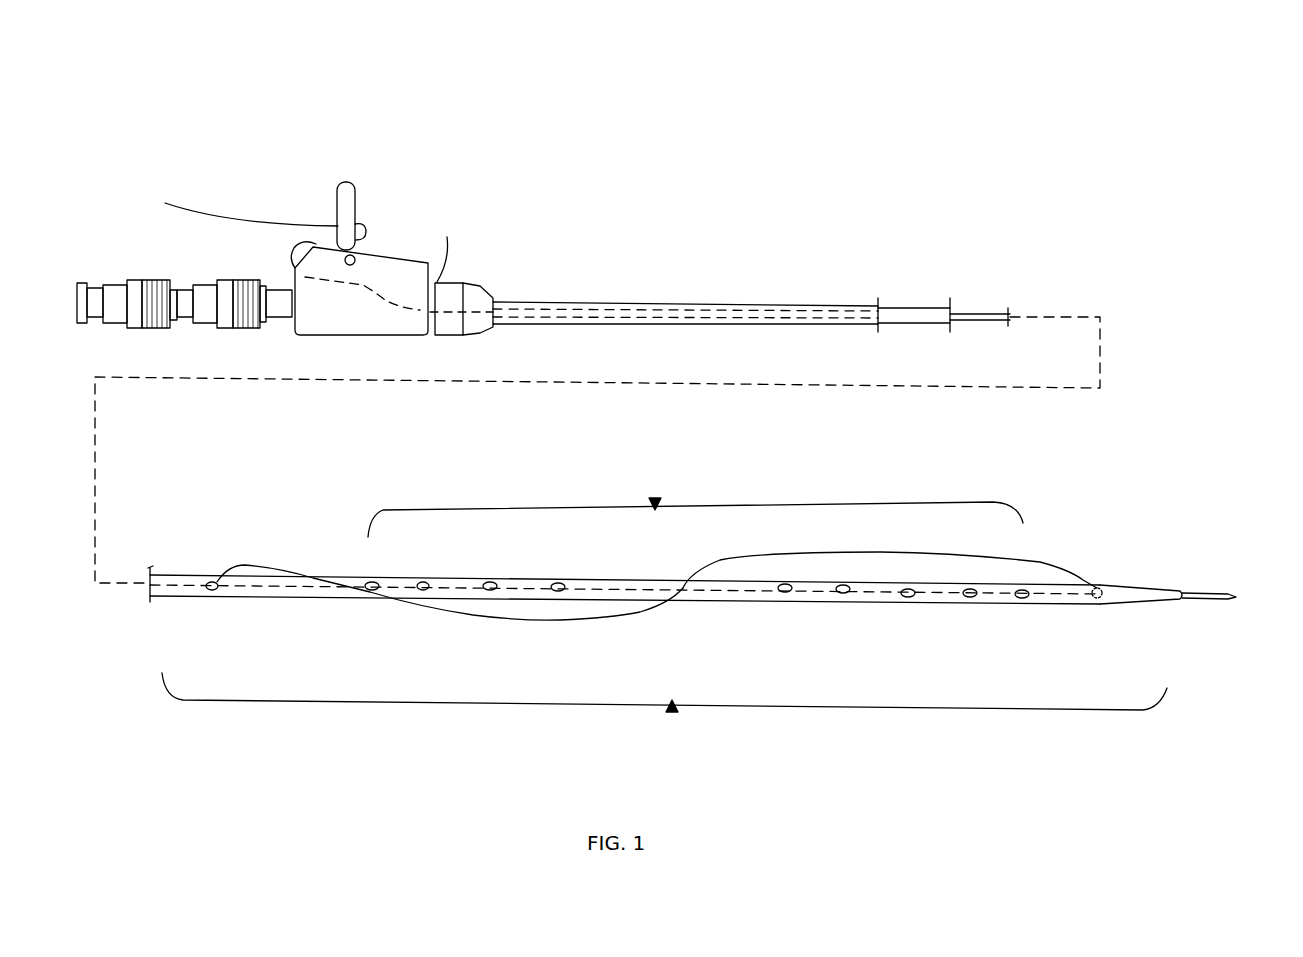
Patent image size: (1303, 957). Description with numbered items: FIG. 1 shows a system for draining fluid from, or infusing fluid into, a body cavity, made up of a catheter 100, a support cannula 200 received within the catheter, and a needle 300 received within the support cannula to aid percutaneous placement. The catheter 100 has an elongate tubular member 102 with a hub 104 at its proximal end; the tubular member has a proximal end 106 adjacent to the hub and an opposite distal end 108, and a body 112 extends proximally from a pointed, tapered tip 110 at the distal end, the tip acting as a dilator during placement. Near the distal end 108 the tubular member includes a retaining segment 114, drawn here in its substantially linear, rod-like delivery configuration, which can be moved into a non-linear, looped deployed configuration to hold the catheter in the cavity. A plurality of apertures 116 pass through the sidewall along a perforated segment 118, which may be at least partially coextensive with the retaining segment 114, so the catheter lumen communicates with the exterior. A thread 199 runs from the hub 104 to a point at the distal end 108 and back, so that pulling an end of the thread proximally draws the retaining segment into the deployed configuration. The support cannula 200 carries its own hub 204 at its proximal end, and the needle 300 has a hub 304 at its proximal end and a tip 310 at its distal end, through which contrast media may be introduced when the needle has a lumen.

The catheter 100 is at (643, 272).
The elongate tubular member 102 is at (778, 303).
The hub 104 is at (373, 338).
The proximal end 106 is at (508, 300).
The distal end 108 is at (1108, 585).
The tip 110 is at (1133, 602).
The body 112 is at (587, 578).
The retaining segment 114 is at (664, 711).
The aperture 116 is at (417, 593).
The perforated segment 118 is at (657, 545).
The thread 199 is at (239, 212).
The support cannula 200 is at (908, 308).
The hub 204 is at (236, 334).
The needle 300 is at (975, 308).
The hub 304 is at (135, 334).
The tip 310 is at (1232, 592).